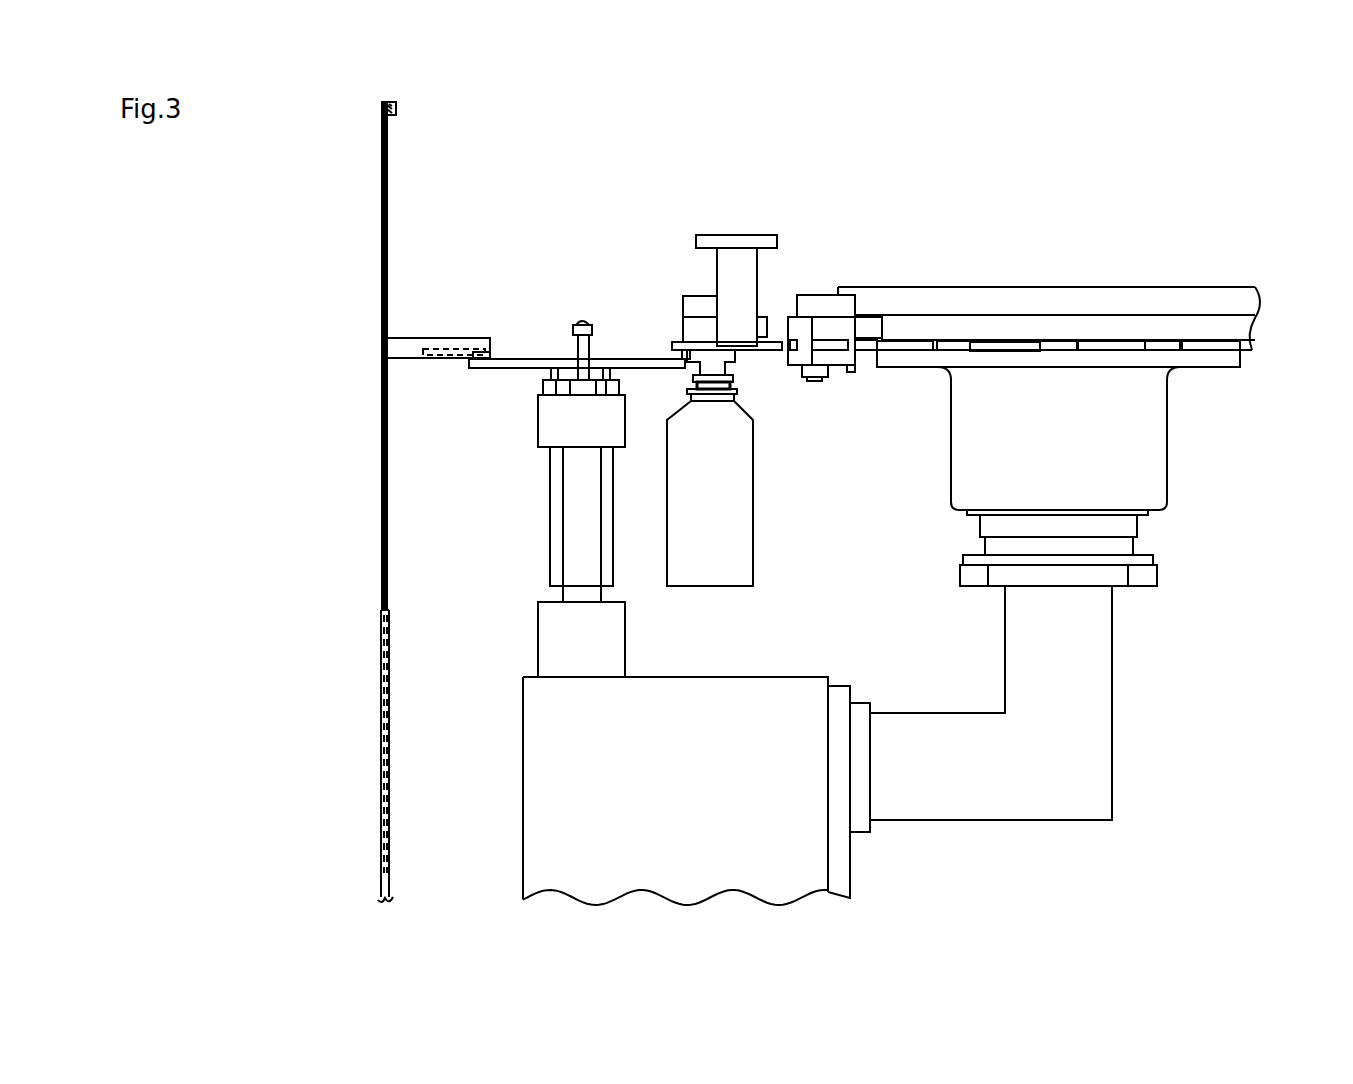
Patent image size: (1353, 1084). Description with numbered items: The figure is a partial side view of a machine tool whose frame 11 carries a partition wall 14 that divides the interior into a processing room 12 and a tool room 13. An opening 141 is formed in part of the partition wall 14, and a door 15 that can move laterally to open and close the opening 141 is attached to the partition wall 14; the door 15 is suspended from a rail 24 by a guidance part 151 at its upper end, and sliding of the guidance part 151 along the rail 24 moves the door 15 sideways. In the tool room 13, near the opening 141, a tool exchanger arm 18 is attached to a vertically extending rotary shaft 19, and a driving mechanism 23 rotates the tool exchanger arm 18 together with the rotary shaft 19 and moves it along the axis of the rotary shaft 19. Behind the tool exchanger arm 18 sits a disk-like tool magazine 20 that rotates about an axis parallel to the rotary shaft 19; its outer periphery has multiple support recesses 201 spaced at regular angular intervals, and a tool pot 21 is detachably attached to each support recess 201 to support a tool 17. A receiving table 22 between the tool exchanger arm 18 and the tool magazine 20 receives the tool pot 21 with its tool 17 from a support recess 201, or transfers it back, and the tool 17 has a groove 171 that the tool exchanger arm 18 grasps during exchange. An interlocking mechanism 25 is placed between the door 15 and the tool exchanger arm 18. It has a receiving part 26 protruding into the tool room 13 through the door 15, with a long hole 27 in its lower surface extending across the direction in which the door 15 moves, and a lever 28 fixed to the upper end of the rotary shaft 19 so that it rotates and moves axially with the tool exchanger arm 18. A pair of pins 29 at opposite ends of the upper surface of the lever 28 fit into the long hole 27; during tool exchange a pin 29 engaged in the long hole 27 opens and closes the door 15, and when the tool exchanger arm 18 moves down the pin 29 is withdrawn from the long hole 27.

The frame 11 is at (380, 706).
The processing room 12 is at (274, 231).
The tool room 13 is at (478, 231).
The partition wall 14 is at (380, 794).
The opening 141 is at (381, 606).
The door 15 is at (382, 190).
The guidance part 151 is at (396, 106).
The tool 17 is at (550, 484).
The groove 171 is at (737, 390).
The tool exchanger arm 18 is at (543, 385).
The rotary shaft 19 is at (565, 543).
The tool magazine 20 is at (906, 367).
The support recess 201 is at (1042, 351).
The tool pot 21 is at (684, 303).
The receiving table 22 is at (735, 240).
The driving mechanism 23 is at (615, 642).
The rail 24 is at (390, 116).
The interlocking mechanism 25 is at (435, 338).
The receiving part 26 is at (480, 338).
The long hole 27 is at (437, 368).
The lever 28 is at (531, 358).
The pin 29 is at (462, 368).